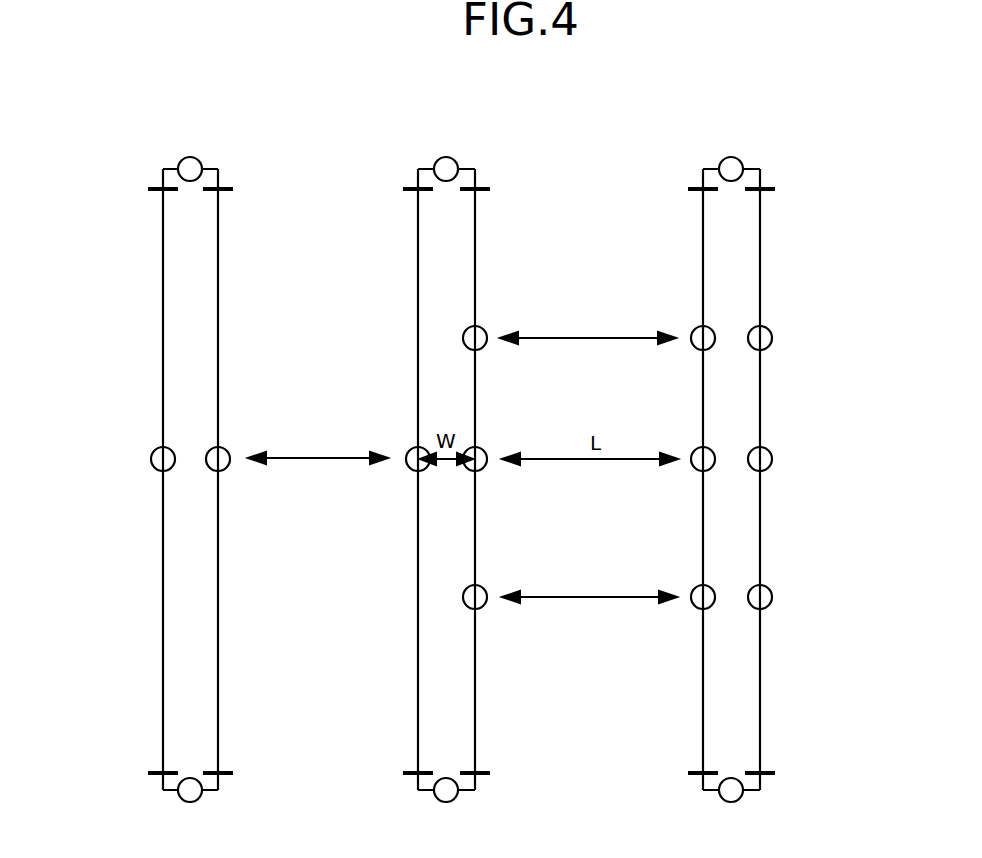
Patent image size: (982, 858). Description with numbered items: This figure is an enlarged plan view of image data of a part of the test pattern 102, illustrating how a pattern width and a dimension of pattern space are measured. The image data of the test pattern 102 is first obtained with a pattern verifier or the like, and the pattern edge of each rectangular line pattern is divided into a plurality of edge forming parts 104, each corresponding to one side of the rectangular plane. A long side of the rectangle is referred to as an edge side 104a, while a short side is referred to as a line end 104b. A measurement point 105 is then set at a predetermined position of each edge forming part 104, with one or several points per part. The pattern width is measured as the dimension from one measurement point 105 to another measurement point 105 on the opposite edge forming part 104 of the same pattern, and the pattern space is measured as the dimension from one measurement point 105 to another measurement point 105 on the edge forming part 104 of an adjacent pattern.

The test pattern 102 is at (176, 268).
The edge forming part 104 is at (788, 457).
The edge side 104a is at (788, 495).
The line end 104b is at (731, 152).
The measurement point 105 is at (818, 599).